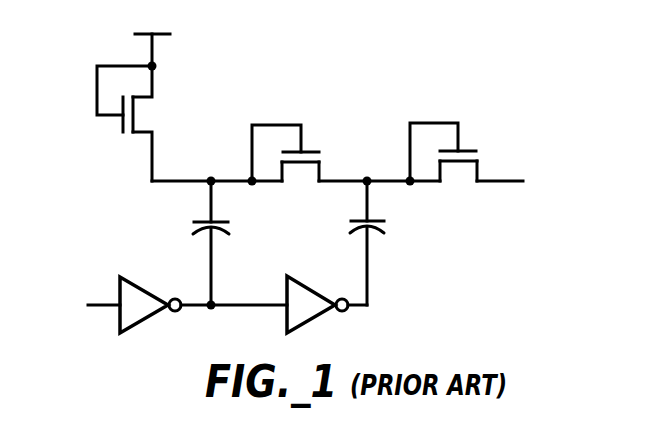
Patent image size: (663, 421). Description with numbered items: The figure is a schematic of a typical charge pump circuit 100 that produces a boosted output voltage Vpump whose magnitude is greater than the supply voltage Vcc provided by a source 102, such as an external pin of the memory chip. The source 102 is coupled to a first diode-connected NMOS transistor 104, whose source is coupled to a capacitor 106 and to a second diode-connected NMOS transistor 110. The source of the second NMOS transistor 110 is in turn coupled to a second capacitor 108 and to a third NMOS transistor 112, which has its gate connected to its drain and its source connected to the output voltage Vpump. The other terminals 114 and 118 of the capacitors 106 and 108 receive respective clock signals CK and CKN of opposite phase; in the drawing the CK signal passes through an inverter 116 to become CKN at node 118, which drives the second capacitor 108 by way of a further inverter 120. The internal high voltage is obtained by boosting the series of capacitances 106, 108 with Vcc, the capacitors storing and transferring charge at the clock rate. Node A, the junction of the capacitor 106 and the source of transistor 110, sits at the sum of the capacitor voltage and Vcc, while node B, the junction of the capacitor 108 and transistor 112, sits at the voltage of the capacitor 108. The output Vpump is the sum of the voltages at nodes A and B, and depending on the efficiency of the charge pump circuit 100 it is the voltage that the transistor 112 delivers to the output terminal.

The two-stage charge pump circuit 100 is at (386, 60).
The source 102 is at (160, 34).
The first diode-connected NMOS transistor 104 is at (153, 87).
The capacitor 106 is at (208, 217).
The second capacitor 108 is at (363, 217).
The second diode-connected NMOS transistor 110 is at (322, 170).
The third NMOS transistor 112 is at (478, 170).
The terminal 114 is at (103, 307).
The first inverter 116 is at (137, 283).
The terminal 118 is at (262, 310).
The second inverter 120 is at (302, 283).